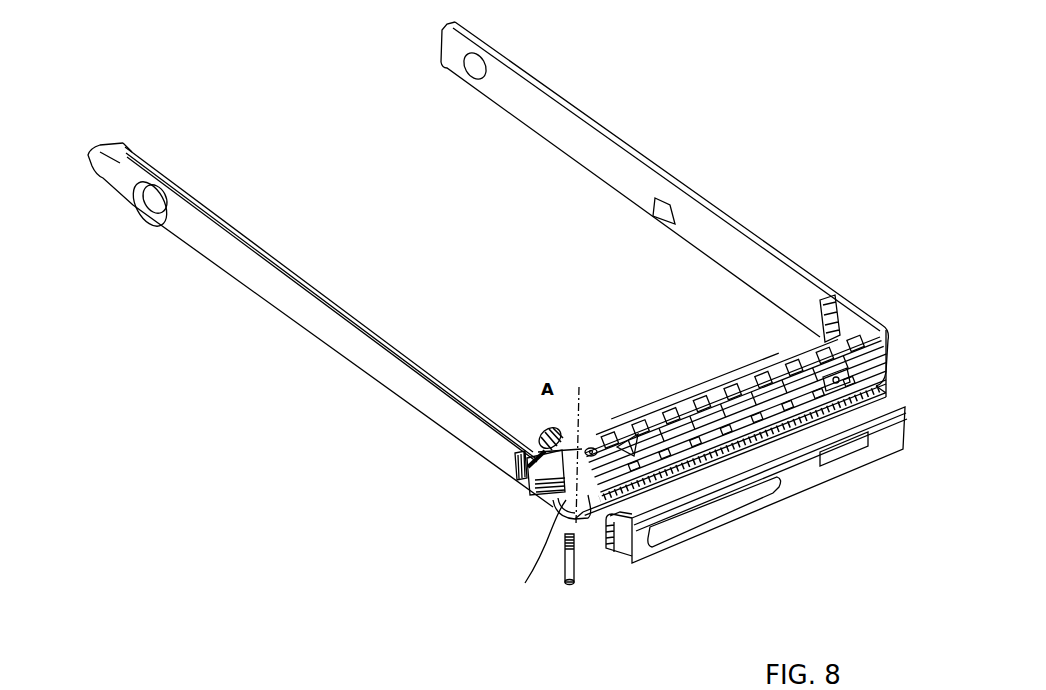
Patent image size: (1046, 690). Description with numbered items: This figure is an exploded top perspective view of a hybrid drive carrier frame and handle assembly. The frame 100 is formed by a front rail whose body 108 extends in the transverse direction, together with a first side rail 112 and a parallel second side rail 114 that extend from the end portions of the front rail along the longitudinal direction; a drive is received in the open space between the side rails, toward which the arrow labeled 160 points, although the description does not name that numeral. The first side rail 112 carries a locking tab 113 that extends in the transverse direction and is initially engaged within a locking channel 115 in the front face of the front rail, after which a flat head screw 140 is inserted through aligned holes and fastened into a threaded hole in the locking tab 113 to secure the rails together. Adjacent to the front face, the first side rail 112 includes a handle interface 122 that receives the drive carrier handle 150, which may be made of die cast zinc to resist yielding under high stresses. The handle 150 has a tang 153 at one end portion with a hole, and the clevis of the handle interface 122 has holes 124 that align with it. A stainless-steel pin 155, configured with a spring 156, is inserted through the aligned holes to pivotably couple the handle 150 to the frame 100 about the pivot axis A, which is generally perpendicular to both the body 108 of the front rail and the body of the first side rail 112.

The frame 100 is at (563, 98).
The body 108 is at (741, 419).
The first side rail 112 is at (410, 393).
The locking tab 113 is at (630, 435).
The second side rail 114 is at (682, 186).
The locking channel 115 is at (625, 437).
The handle interface 122 is at (533, 518).
The holes 124 is at (588, 447).
The flat head screw 140 is at (528, 467).
The drive carrier handle 150 is at (700, 532).
The tang 153 is at (604, 571).
The pin 155 is at (563, 578).
The spring 156 is at (600, 511).
The receiving space 160 is at (188, 409).